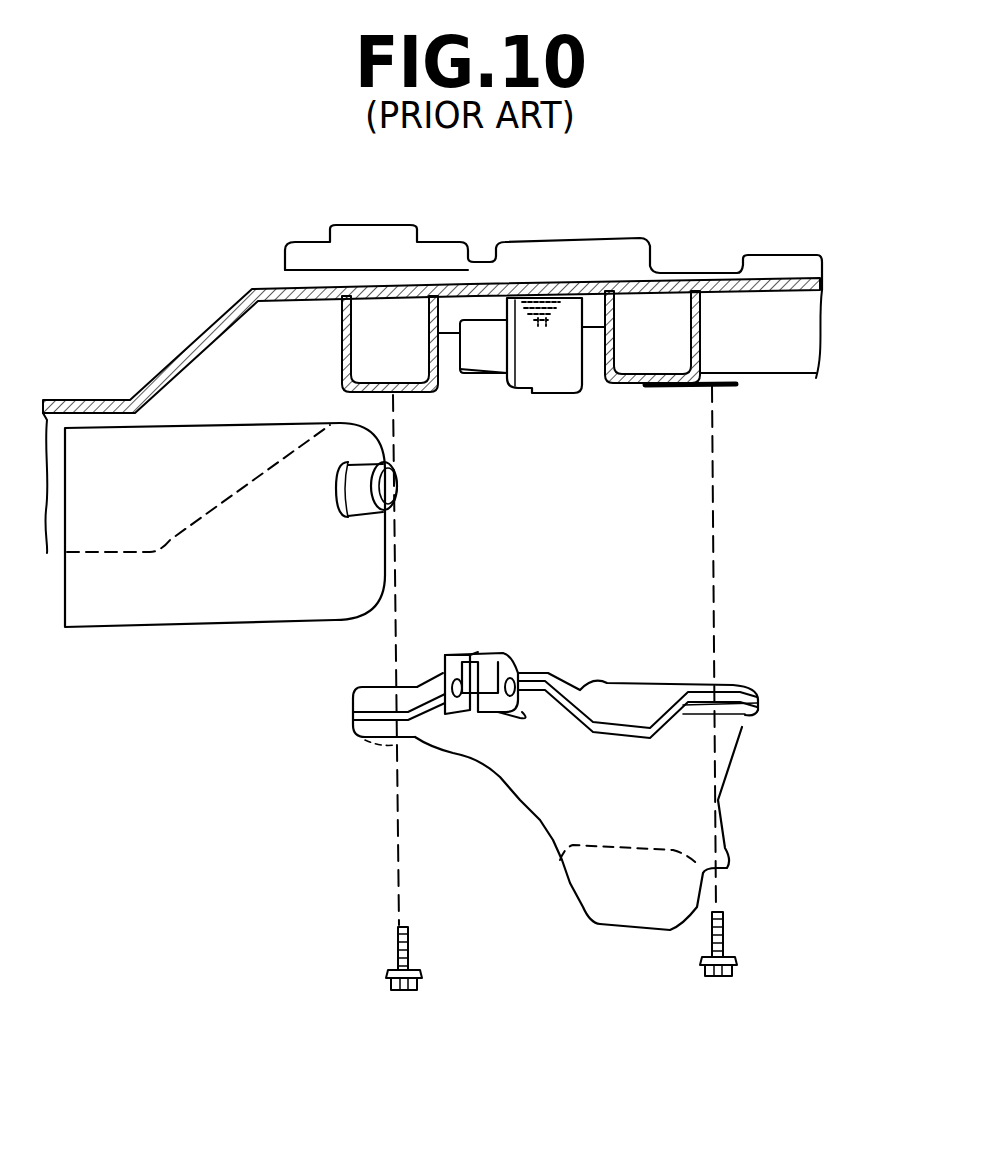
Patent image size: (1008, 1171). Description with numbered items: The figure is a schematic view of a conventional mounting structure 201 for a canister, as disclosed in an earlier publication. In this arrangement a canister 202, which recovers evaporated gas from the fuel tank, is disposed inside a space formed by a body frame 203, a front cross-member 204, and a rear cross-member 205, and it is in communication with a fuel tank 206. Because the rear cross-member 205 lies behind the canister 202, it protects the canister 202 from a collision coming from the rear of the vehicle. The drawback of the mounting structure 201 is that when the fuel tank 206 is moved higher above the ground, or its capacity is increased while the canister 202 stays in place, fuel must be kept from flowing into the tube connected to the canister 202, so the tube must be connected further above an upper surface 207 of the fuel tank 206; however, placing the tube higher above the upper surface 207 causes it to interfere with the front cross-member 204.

The mounting structure 201 is at (192, 186).
The canister 202 is at (570, 391).
The body frame 203 is at (769, 255).
The front cross-member 204 is at (342, 340).
The rear cross-member 205 is at (699, 333).
The fuel tank 206 is at (147, 627).
The upper surface 207 is at (187, 424).